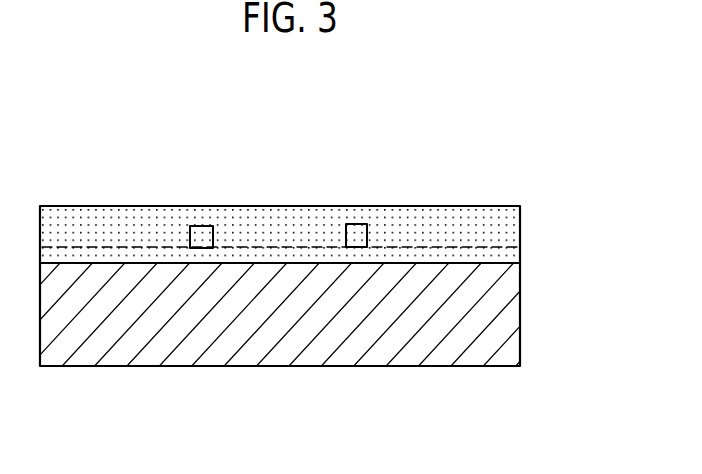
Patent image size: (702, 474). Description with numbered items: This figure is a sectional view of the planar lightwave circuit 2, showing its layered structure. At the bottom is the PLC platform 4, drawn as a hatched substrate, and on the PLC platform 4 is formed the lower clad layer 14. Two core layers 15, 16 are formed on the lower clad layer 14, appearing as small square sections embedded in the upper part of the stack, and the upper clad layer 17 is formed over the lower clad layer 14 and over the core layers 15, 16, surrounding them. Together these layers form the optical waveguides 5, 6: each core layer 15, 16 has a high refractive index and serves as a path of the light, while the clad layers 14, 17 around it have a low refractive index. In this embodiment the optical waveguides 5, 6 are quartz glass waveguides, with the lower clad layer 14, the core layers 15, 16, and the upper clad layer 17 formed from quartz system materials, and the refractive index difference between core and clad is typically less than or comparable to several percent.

The planar lightwave circuit 2 is at (297, 168).
The PLC platform 4 is at (273, 367).
The optical waveguide 5 is at (203, 227).
The optical waveguide 6 is at (361, 224).
The lower clad layer 14 is at (505, 258).
The core layer 15 is at (190, 237).
The core layer 16 is at (357, 235).
The upper clad layer 17 is at (503, 221).